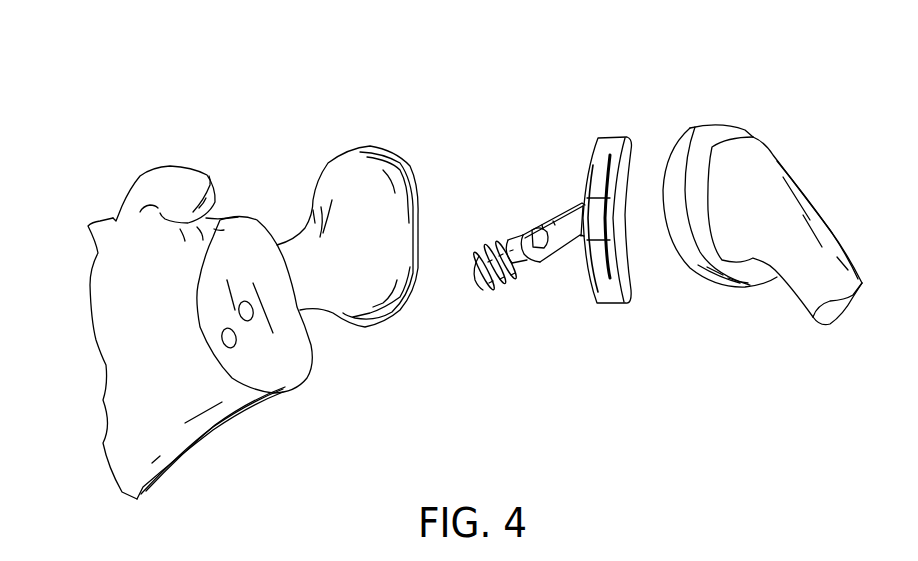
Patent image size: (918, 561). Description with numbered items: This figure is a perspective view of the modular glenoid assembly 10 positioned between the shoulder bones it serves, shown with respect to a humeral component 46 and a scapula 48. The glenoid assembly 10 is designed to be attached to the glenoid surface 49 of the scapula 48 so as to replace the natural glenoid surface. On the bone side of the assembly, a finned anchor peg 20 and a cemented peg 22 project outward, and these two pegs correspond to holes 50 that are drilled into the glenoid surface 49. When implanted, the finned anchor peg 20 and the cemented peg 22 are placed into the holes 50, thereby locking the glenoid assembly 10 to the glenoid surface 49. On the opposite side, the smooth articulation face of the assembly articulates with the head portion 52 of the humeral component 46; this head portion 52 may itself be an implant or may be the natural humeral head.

The glenoid assembly 10 is at (577, 116).
The finned anchor peg 20 is at (522, 234).
The cemented peg 22 is at (548, 240).
The humeral component 46 is at (812, 186).
The scapula 48 is at (280, 226).
The glenoid surface 49 is at (293, 365).
The holes 50 is at (233, 347).
The head portion 52 is at (690, 127).